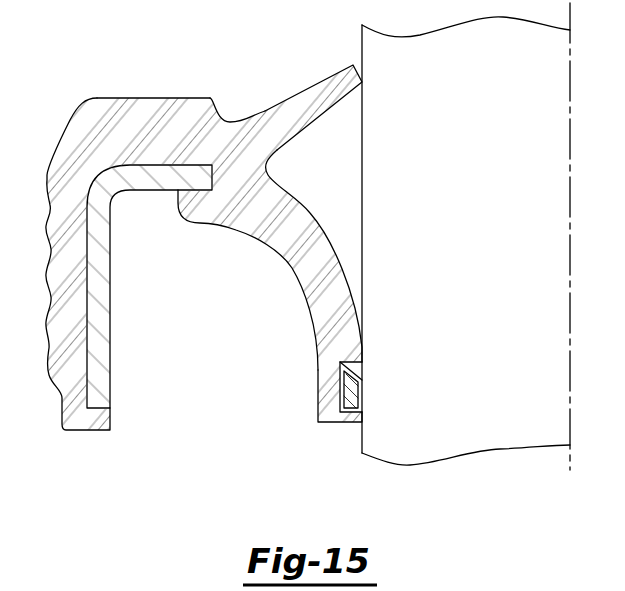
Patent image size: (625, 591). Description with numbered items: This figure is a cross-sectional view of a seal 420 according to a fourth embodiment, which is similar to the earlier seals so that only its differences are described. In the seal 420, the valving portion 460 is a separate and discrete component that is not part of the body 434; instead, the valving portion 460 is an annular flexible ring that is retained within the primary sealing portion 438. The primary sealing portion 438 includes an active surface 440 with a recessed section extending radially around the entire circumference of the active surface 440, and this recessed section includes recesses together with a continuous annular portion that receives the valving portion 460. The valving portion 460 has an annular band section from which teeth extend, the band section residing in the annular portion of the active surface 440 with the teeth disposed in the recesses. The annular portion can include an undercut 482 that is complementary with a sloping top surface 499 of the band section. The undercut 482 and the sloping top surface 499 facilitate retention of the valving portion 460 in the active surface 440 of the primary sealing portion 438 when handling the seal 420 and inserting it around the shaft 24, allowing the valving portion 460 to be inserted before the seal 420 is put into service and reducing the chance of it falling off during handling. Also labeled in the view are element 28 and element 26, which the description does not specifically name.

The seal 420 is at (94, 58).
The body 434 is at (213, 127).
The sealing lip 28 is at (284, 67).
The primary sealing portion 438 is at (288, 255).
The base portion 26 is at (156, 425).
The shaft 24 is at (488, 188).
The sloping top surface 499 is at (350, 368).
The valving portion 460 is at (358, 402).
The undercut 482 is at (350, 383).
The active surface 440 is at (370, 417).